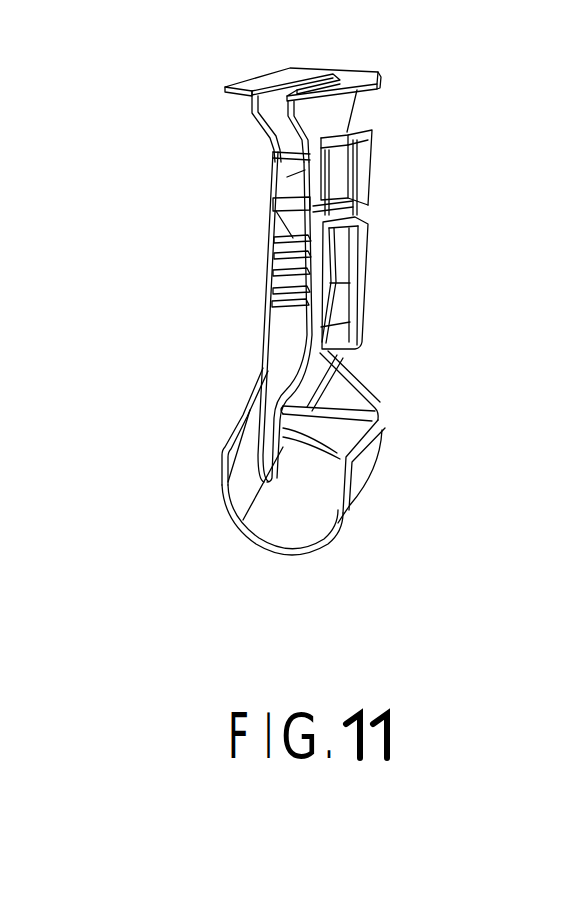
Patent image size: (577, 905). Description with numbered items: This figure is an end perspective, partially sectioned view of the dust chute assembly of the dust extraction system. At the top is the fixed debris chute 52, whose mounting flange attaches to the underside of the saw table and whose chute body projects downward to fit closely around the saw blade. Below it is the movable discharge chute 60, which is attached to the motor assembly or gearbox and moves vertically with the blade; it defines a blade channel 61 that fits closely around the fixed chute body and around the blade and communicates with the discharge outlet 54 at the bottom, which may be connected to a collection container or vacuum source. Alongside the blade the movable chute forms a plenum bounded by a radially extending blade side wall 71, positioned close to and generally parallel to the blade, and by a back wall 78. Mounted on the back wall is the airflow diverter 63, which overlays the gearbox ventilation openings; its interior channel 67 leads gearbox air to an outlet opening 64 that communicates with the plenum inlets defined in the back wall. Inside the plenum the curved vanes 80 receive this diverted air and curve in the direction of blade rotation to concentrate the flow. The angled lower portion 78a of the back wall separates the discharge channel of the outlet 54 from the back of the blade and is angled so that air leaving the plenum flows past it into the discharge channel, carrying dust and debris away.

The fixed debris chute 52 is at (358, 106).
The discharge outlet 54 is at (303, 532).
The movable discharge chute 60 is at (240, 435).
The blade channel 61 is at (254, 400).
The airflow diverter 63 is at (364, 252).
The outlet opening 64 is at (366, 218).
The interior channel 67 is at (346, 304).
The blade side wall 71 is at (267, 310).
The back wall 78 is at (313, 408).
The angled lower portion 78a is at (270, 477).
The curved vanes 80 is at (270, 273).